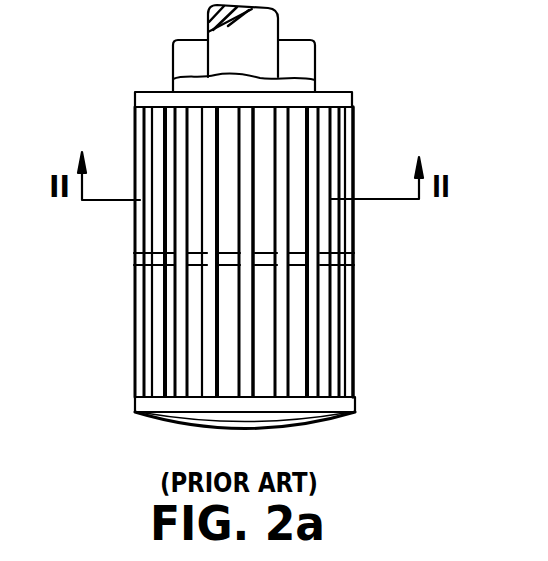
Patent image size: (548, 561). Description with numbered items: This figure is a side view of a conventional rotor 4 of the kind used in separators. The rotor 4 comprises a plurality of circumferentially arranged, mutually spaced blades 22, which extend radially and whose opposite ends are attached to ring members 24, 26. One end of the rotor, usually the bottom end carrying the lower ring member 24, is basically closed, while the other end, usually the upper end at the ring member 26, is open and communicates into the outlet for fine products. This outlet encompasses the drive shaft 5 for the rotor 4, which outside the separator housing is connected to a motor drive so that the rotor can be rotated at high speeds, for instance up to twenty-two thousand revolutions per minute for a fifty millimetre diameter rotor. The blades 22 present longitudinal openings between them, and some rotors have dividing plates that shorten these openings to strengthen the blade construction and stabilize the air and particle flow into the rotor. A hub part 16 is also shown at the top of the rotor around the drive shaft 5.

The rotor 4 is at (368, 328).
The drive shaft 5 is at (267, 62).
The shaft housing / hub 16 is at (180, 62).
The blades 22 is at (150, 150).
The ring member 24 is at (148, 405).
The ring member 26 is at (349, 91).